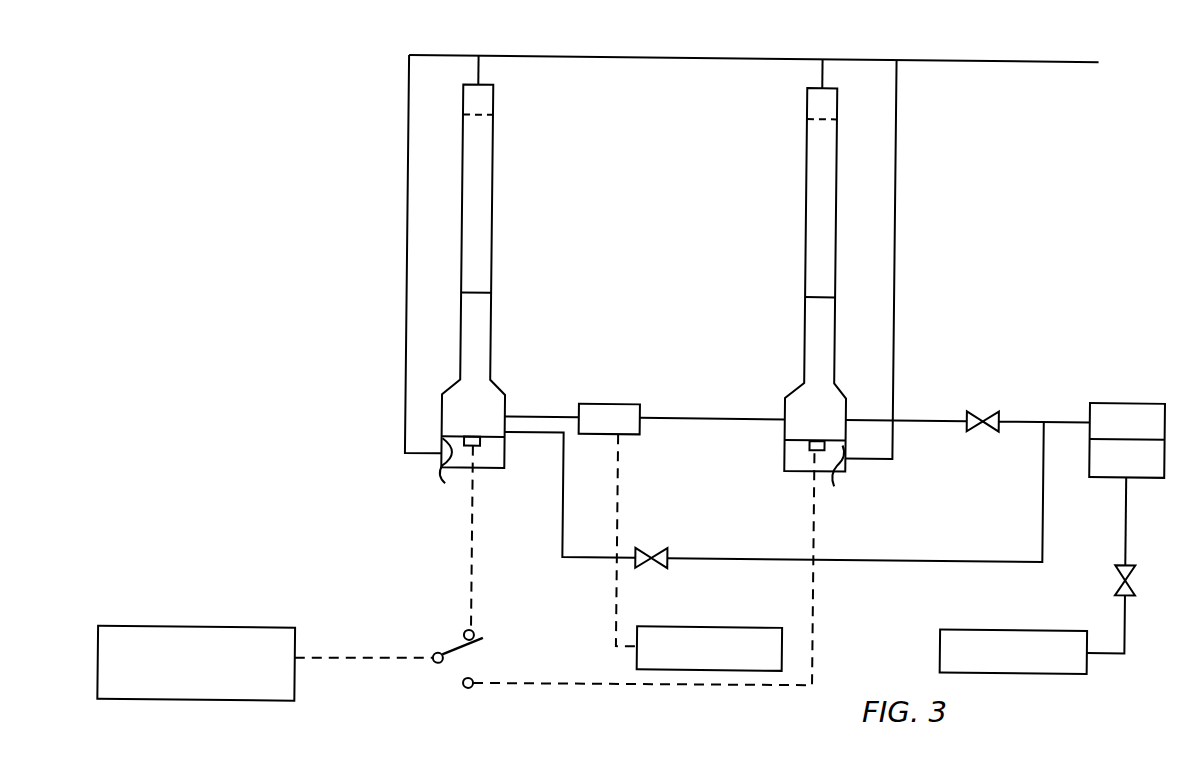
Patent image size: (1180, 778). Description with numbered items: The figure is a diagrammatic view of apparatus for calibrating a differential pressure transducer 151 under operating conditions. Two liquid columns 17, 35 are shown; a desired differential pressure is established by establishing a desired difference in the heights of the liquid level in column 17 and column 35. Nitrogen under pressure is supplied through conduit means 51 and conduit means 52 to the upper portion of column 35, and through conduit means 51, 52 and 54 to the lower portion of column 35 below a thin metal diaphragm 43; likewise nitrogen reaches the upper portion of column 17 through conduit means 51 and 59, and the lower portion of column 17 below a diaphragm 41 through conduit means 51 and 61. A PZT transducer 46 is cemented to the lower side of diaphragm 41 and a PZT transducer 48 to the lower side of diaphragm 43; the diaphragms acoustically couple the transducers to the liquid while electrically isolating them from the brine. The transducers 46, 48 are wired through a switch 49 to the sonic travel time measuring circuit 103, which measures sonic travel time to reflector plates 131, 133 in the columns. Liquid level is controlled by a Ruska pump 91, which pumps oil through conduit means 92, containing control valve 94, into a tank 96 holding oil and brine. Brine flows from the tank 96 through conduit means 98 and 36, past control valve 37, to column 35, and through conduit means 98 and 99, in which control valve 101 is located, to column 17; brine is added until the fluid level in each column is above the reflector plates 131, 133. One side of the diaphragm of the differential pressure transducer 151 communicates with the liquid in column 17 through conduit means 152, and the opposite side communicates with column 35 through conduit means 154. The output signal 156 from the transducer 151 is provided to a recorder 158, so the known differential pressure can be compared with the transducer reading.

The column 17 is at (490, 211).
The column 35 is at (804, 215).
The conduit means 36 is at (928, 418).
The control valve 37 is at (983, 412).
The metal diaphragm 41 is at (442, 472).
The metal diaphragm 43 is at (836, 477).
The PZT transducer 46 is at (480, 443).
The PZT transducer 48 is at (810, 447).
The switch 49 is at (441, 634).
The conduit means 51 is at (1040, 58).
The conduit means 52 is at (819, 72).
The conduit means 54 is at (893, 205).
The conduit means 59 is at (475, 71).
The conduit means 61 is at (406, 268).
The Ruska pump 91 is at (988, 627).
The conduit means 92 is at (1125, 604).
The control valve 94 is at (1120, 576).
The tank 96 is at (1135, 399).
The conduit means 98 is at (1052, 418).
The conduit means 99 is at (987, 558).
The control valve 101 is at (653, 552).
The sonic travel time measuring circuit 103 is at (202, 632).
The reflector plate 131 is at (490, 117).
The reflector plate 133 is at (804, 118).
The differential pressure transducer 151 is at (606, 405).
The conduit means 152 is at (545, 418).
The conduit means 154 is at (706, 418).
The output signal 156 is at (618, 483).
The recorder 158 is at (712, 627).